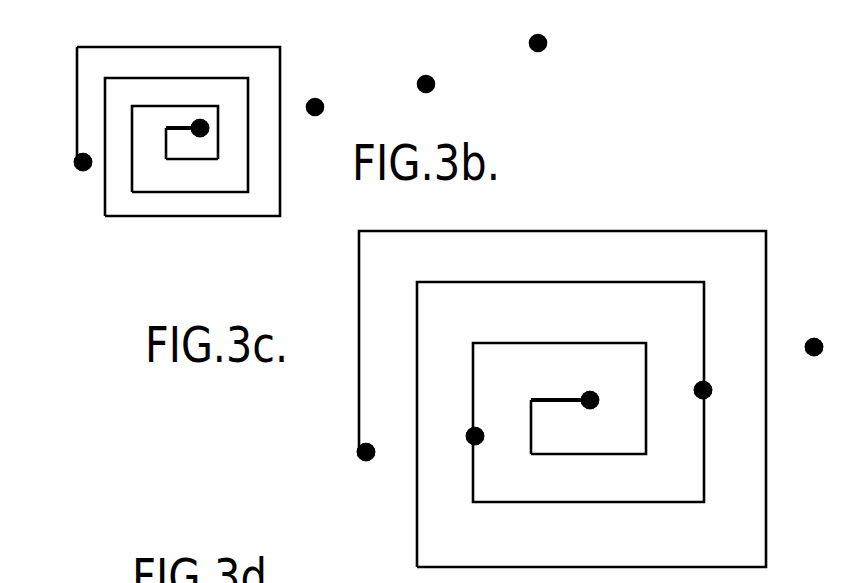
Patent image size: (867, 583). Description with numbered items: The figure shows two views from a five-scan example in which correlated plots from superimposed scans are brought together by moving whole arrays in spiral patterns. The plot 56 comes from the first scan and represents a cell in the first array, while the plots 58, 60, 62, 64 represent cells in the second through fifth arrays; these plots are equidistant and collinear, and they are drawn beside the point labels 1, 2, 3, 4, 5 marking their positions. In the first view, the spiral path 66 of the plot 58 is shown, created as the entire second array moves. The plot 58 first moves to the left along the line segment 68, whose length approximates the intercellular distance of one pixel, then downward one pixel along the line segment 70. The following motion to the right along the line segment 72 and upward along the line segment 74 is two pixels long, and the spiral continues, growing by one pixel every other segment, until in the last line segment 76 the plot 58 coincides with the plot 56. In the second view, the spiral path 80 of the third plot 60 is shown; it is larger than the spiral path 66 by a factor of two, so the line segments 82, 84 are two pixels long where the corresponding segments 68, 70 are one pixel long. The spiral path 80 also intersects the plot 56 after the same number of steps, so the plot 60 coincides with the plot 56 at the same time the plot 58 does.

In FIG. 3B, the spiral path 66 is at (196, 44).
In FIG. 3B, the line segment 74 is at (250, 107).
In FIG. 3B, the last line segment 76 is at (77, 110).
In FIG. 3B, the plot 56 is at (80, 164).
In FIG. 3C, the plot 56 is at (362, 448).
In FIG. 3B, the plot 58 is at (205, 132).
In FIG. 3C, the plot 58 is at (470, 433).
In FIG. 3C, the third plot 60 is at (583, 396).
In FIG. 3C, the plot 62 is at (697, 389).
In FIG. 3C, the plot 64 is at (813, 338).
In FIG. 3B, the line segment 68 is at (167, 128).
In FIG. 3B, the line segment 70 is at (165, 160).
In FIG. 3B, the line segment 72 is at (177, 149).
In FIG. 3C, the spiral path 80 is at (603, 228).
In FIG. 3C, the line segment 82 is at (540, 398).
In FIG. 3C, the line segment 84 is at (531, 443).
In FIG. 3B, the point 1 is at (83, 176).
In FIG. 3C, the point 1 is at (366, 468).
In FIG. 3B, the point 2 is at (195, 141).
In FIG. 3C, the point 2 is at (478, 449).
In FIG. 3B, the point 3 is at (315, 121).
In FIG. 3C, the point 3 is at (590, 413).
In FIG. 3B, the point 4 is at (426, 98).
In FIG. 3C, the point 4 is at (708, 405).
In FIG. 3B, the point 5 is at (538, 56).
In FIG. 3C, the point 5 is at (814, 359).